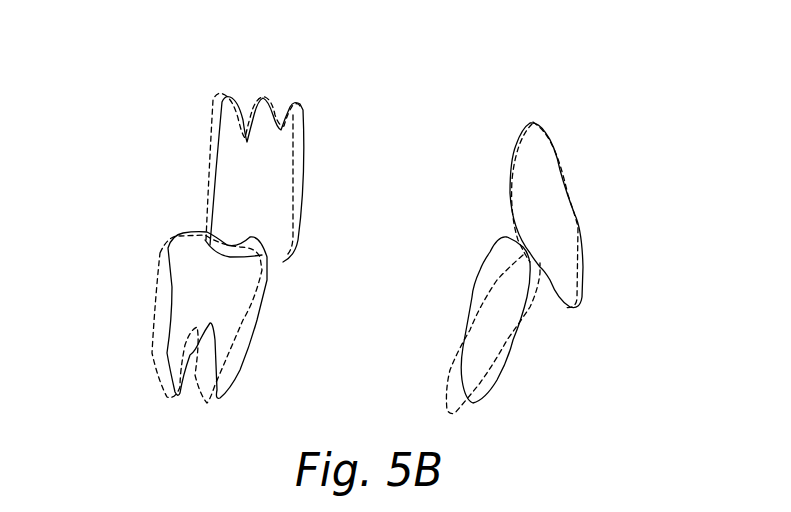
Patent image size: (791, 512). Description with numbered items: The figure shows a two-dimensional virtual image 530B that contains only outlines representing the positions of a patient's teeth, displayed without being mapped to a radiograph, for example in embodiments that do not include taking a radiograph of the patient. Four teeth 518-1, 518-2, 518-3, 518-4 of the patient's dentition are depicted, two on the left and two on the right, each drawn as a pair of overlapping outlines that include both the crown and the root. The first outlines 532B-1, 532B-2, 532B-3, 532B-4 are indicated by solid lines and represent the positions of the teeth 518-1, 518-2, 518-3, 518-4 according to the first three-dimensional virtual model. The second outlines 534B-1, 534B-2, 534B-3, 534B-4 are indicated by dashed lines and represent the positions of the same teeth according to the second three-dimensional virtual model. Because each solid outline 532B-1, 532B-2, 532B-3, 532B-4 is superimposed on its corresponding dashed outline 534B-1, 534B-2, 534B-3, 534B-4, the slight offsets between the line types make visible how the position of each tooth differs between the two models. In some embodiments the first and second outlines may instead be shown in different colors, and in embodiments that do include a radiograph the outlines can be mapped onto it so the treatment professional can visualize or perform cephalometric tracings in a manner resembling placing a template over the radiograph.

The 2D virtual image 530B is at (93, 80).
The tooth 518-1 is at (250, 177).
The tooth 518-2 is at (200, 317).
The tooth 518-3 is at (555, 215).
The tooth 518-4 is at (475, 325).
The first outline 532B-1 is at (305, 108).
The first outline 532B-2 is at (257, 322).
The first outline 532B-3 is at (587, 270).
The first outline 532B-4 is at (480, 272).
The second outline 534B-1 is at (283, 193).
The second outline 534B-2 is at (242, 302).
The second outline 534B-3 is at (560, 155).
The second outline 534B-4 is at (447, 373).